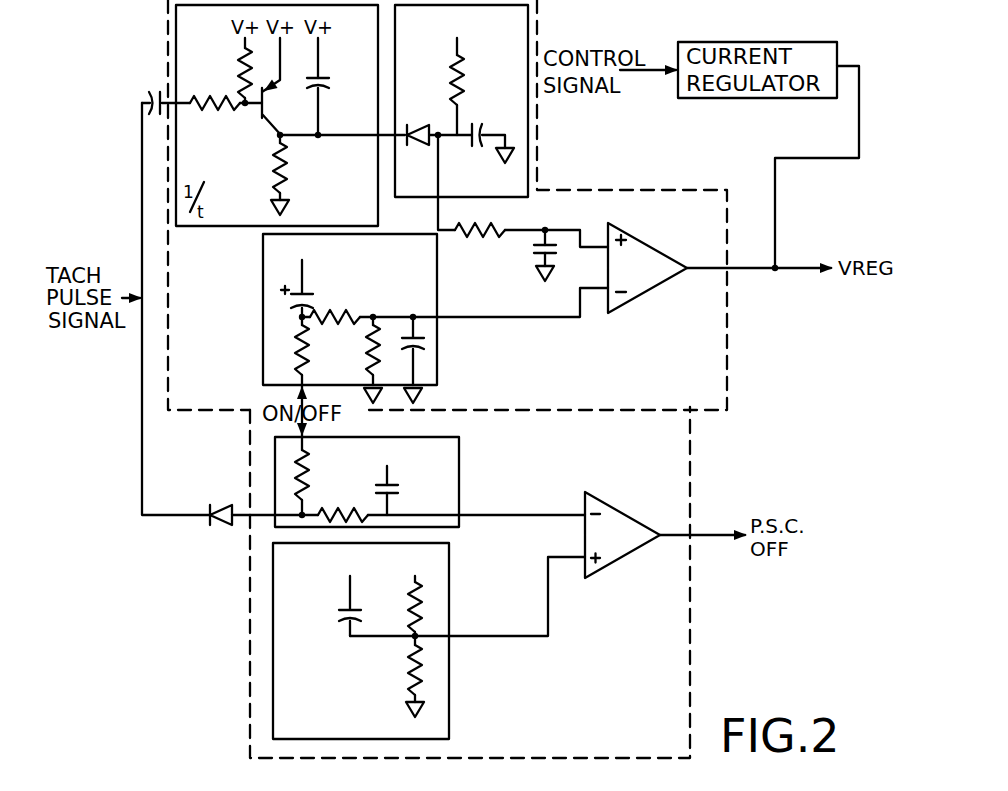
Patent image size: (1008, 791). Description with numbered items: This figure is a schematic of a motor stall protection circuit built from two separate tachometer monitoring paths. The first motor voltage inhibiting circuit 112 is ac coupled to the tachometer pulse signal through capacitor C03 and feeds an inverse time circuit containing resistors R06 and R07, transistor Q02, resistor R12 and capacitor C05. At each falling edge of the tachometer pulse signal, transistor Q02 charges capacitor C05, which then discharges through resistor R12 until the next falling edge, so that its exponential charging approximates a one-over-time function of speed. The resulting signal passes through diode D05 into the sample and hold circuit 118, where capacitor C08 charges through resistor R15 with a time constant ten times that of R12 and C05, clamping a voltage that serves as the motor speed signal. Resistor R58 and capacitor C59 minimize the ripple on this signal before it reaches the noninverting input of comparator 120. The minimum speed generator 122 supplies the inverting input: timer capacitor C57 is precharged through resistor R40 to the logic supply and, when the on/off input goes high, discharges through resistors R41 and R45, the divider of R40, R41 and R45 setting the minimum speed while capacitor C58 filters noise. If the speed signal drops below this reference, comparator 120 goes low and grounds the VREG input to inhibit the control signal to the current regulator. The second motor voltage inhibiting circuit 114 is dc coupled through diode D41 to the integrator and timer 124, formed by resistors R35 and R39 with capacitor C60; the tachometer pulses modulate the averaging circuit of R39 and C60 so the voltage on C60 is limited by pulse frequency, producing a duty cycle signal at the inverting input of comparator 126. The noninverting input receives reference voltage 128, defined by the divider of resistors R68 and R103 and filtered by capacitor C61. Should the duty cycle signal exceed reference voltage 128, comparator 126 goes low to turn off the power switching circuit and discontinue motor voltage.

The first motor voltage inhibiting circuit 112 is at (168, 44).
The second motor voltage inhibiting circuit 114 is at (250, 623).
The sample and hold circuit 118 is at (528, 125).
The comparator 120 is at (642, 294).
The minimum speed generator 122 is at (437, 347).
The integrator and timer 124 is at (459, 470).
The comparator 126 is at (620, 512).
The reference voltage 128 is at (449, 600).
The capacitor C03 is at (153, 92).
The resistor R06 is at (216, 110).
The resistor R07 is at (244, 68).
The transistor Q02 is at (264, 128).
The resistor R12 is at (288, 176).
The capacitor C05 is at (329, 80).
The diode D05 is at (410, 122).
The resistor R15 is at (462, 95).
The capacitor C08 is at (472, 152).
The resistor R58 is at (475, 236).
The capacitor C59 is at (533, 254).
The timer capacitor C57 is at (314, 296).
The resistor R41 is at (340, 313).
The resistor R40 is at (332, 352).
The resistor R45 is at (366, 358).
The capacitor C58 is at (426, 310).
The diode D41 is at (214, 506).
The resistor R35 is at (326, 462).
The resistor R39 is at (342, 512).
The timer capacitor C60 is at (396, 494).
The capacitor C61 is at (340, 614).
The resistor R68 is at (410, 600).
The resistor R103 is at (410, 664).